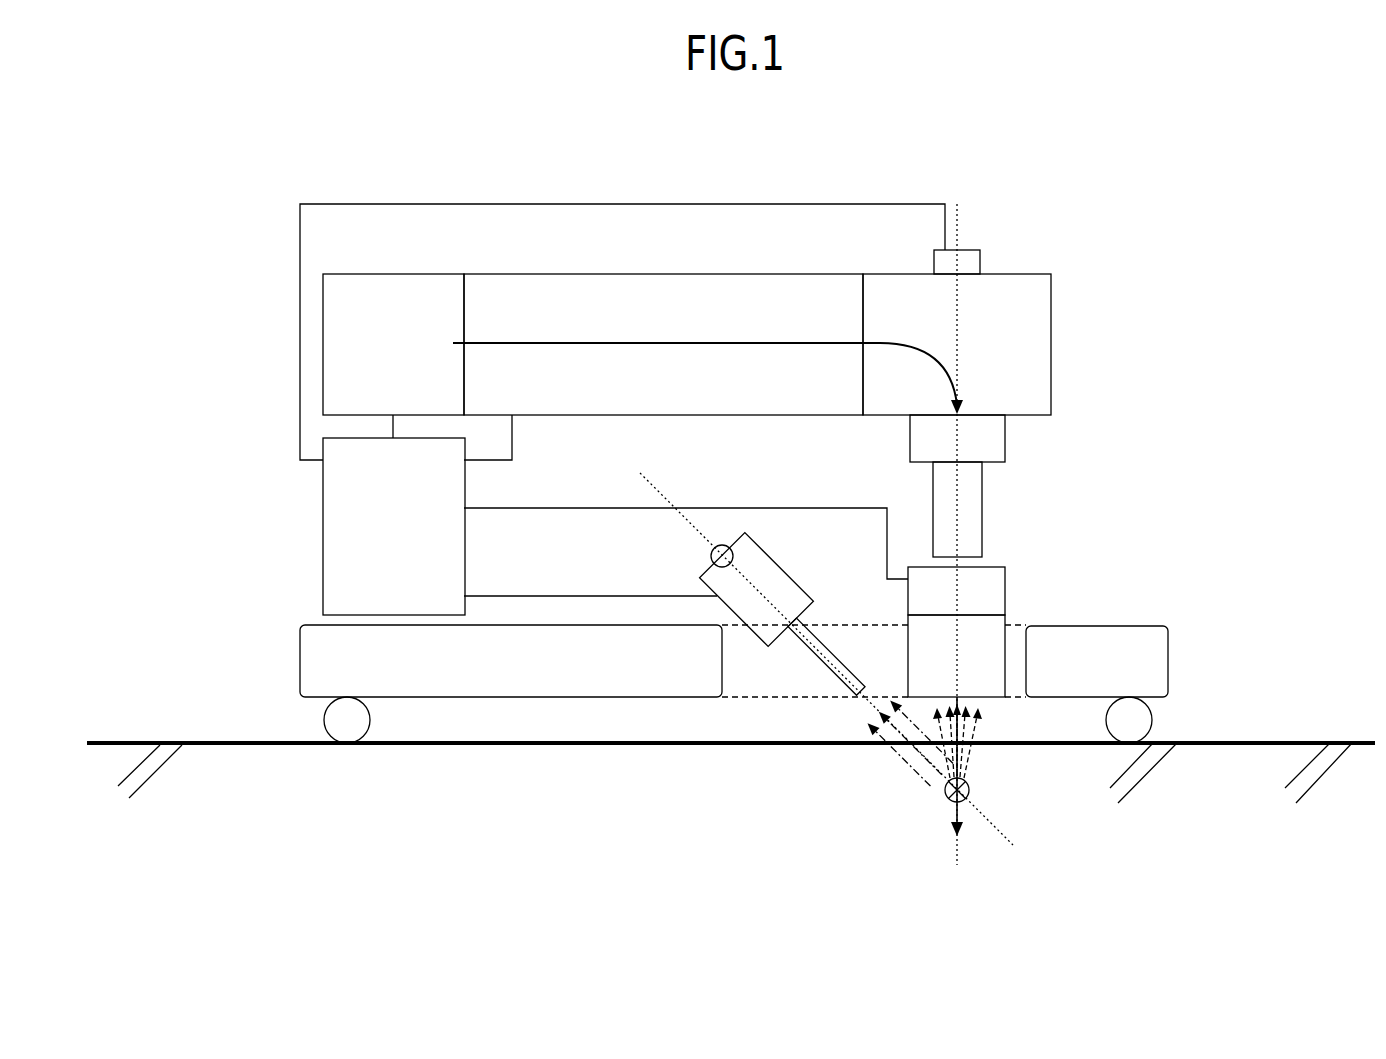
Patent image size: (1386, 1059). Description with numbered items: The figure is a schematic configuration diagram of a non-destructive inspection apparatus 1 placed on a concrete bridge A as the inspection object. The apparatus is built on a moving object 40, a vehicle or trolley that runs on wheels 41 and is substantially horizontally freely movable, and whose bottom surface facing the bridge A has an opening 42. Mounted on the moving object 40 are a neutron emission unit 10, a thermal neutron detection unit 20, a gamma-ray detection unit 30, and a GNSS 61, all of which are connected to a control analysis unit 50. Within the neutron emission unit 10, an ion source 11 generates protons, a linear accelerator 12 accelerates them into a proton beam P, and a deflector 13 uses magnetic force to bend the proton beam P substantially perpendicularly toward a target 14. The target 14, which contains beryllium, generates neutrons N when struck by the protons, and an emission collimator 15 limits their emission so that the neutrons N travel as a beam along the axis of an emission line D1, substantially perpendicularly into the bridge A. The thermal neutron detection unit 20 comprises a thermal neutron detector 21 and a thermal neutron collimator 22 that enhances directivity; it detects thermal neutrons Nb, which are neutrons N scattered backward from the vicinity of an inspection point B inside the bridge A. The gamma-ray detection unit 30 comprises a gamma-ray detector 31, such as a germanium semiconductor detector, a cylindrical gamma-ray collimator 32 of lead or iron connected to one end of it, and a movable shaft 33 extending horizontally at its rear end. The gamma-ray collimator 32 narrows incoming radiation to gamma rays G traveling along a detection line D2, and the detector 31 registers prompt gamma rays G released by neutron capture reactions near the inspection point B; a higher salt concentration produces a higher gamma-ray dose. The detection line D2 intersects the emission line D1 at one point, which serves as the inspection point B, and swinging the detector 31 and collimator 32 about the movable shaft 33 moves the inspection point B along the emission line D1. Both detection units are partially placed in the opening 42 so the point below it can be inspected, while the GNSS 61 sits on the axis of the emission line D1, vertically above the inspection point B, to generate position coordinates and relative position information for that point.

The non-destructive inspection apparatus 1 is at (852, 182).
The neutron emission unit 10 is at (1056, 243).
The ion source 11 is at (360, 270).
The linear accelerator 12 is at (702, 272).
The deflector 13 is at (876, 272).
The target 14 is at (1005, 437).
The emission collimator 15 is at (982, 480).
The GNSS 61 is at (968, 250).
The thermal neutron detection unit 20 is at (1070, 537).
The thermal neutron detector 21 is at (1005, 578).
The thermal neutron collimator 22 is at (1005, 635).
The gamma-ray detection unit 30 is at (812, 536).
The gamma-ray detector 31 is at (796, 582).
The gamma-ray collimator 32 is at (820, 633).
The movable shaft 33 is at (710, 556).
The moving object 40 is at (1125, 626).
The wheels 41 is at (323, 721).
The opening 42 is at (765, 700).
The control analysis unit 50 is at (465, 540).
The proton beam P is at (535, 343).
The neutrons N is at (950, 832).
The thermal neutrons Nb is at (970, 730).
The gamma rays G is at (906, 770).
The inspection point B is at (975, 790).
The emission line D1 is at (957, 549).
The detection line D2 is at (843, 672).
The bridge A is at (1310, 741).